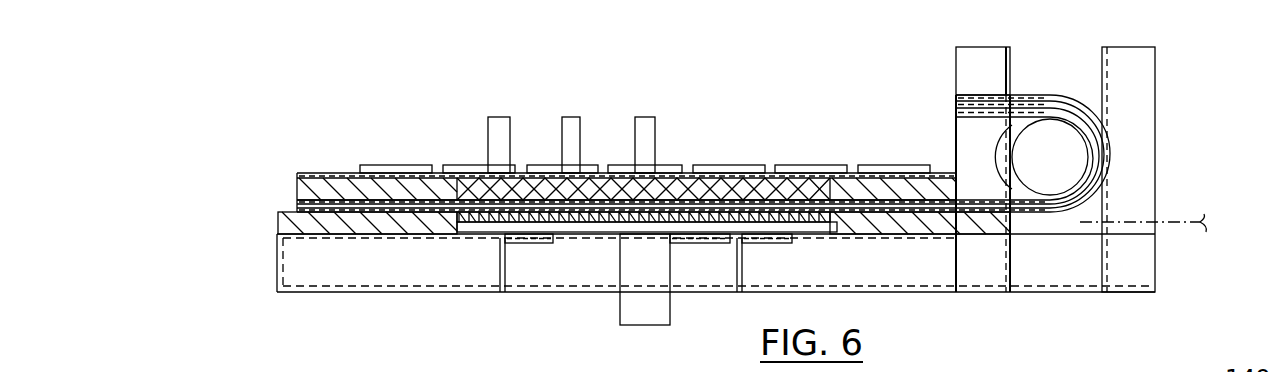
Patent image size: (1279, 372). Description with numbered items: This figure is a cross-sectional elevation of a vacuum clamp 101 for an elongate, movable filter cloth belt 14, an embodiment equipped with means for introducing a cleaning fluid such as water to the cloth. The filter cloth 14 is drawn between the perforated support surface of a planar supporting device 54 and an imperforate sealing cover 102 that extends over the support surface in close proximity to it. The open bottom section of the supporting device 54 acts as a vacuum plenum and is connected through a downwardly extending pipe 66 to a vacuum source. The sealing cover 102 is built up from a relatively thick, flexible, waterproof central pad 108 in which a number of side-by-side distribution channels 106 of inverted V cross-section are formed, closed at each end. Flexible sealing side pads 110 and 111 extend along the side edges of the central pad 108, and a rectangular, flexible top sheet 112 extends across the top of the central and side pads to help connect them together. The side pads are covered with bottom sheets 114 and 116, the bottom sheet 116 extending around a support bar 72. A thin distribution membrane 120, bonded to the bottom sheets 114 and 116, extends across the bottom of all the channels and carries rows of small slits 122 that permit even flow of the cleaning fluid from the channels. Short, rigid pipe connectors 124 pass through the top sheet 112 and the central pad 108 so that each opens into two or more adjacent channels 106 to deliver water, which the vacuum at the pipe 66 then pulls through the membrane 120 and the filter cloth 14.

The filter cloth belt 14 is at (1172, 222).
The planar supporting device 54 is at (808, 234).
The downwardly extending pipe 66 is at (628, 300).
The support bar 72 is at (1066, 96).
The vacuum clamp 101 is at (1172, 92).
The sealing cover 102 is at (297, 180).
The distribution channels 106 is at (750, 190).
The central pad 108 is at (693, 187).
The sealing side pad 110 is at (390, 190).
The sealing side pad 111 is at (880, 190).
The top sheet 112 is at (323, 173).
The bottom sheet 114 is at (297, 204).
The bottom sheet 116 is at (973, 204).
The distribution membrane 120 is at (993, 213).
The slits 122 is at (597, 223).
The pipe connectors 124 is at (640, 118).